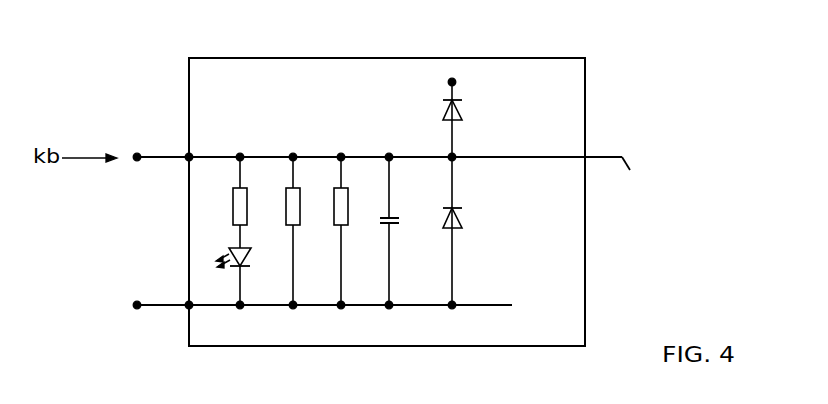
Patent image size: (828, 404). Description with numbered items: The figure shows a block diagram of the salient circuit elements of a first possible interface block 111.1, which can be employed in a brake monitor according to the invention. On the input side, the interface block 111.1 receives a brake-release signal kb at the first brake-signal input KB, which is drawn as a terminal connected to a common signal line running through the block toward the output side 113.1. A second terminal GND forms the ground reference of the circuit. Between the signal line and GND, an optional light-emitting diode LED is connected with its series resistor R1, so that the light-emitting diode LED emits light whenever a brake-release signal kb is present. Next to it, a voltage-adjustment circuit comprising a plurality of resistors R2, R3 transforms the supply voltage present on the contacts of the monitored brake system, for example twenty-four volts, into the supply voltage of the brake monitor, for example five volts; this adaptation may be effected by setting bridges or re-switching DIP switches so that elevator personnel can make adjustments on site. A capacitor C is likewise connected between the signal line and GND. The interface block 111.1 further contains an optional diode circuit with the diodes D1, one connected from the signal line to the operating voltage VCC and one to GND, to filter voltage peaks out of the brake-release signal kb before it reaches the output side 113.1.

The interface block 111.1 is at (235, 65).
The output side 113.1 is at (612, 157).
The first brake-signal input KB is at (161, 148).
The ground GND is at (322, 291).
The operating voltage VCC is at (476, 80).
The series resistor R1 is at (226, 202).
The resistor R2 is at (278, 231).
The resistor R3 is at (325, 231).
The capacitor C is at (381, 231).
The diode D1 is at (437, 193).
The light-emitting diode LED is at (248, 276).